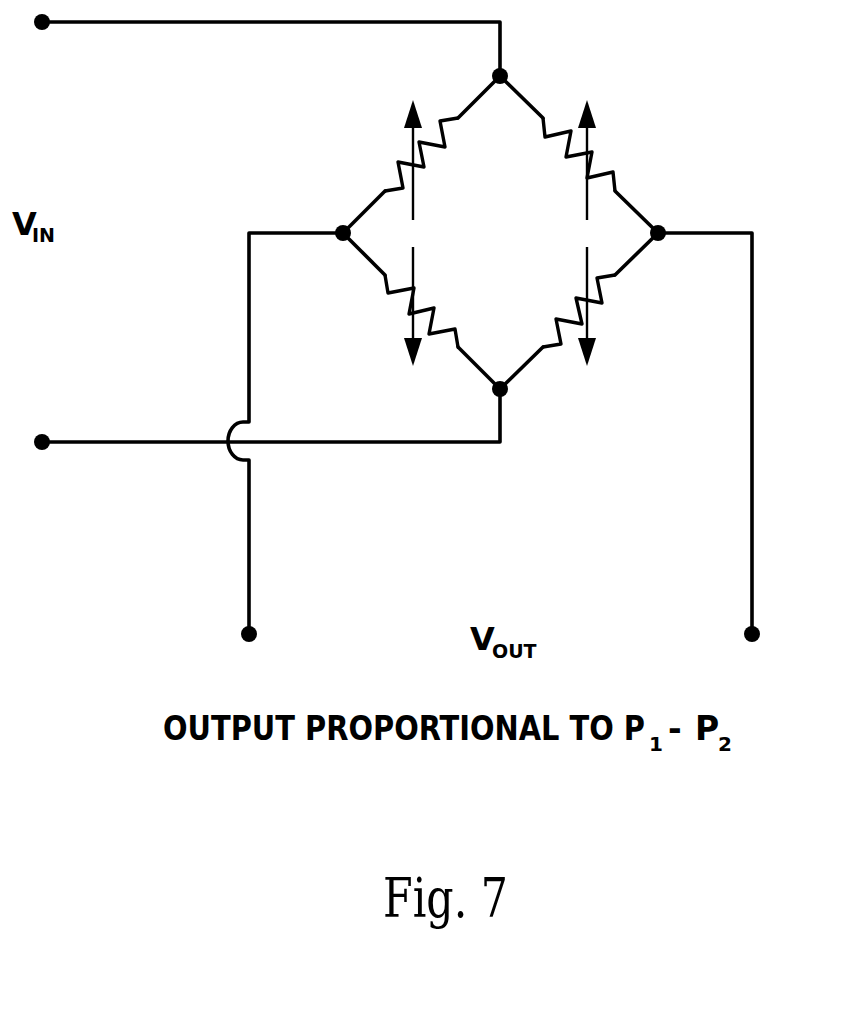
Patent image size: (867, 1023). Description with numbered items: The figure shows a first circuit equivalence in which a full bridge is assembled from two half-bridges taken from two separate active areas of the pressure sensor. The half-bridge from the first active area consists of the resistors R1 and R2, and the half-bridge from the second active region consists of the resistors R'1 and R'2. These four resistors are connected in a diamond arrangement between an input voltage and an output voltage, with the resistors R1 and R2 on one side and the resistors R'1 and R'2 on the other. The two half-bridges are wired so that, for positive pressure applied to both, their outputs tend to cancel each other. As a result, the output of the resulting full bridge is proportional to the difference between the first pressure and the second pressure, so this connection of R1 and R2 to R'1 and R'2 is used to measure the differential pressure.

The first half-bridge resistor of first active area R1 is at (400, 151).
The first half-bridge resistor of second active area R'1 is at (598, 151).
The second half-bridge resistor of first active area R2 is at (400, 309).
The second half-bridge resistor of second active area R'2 is at (598, 309).